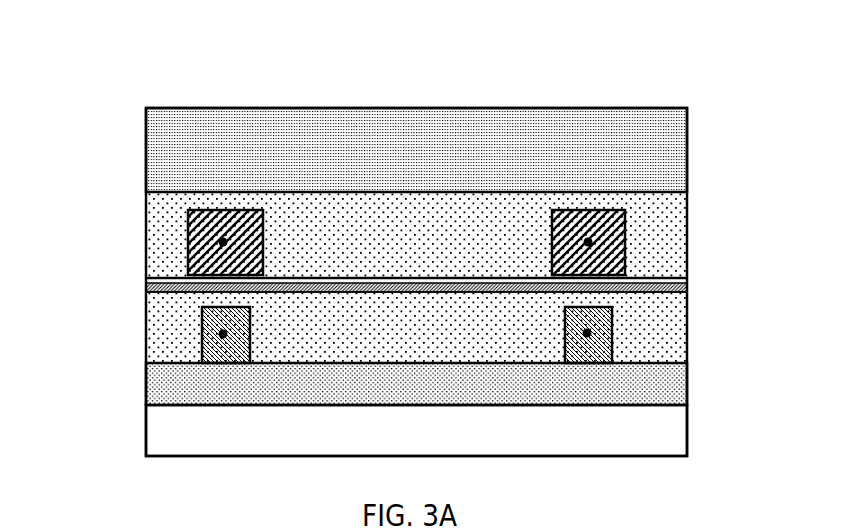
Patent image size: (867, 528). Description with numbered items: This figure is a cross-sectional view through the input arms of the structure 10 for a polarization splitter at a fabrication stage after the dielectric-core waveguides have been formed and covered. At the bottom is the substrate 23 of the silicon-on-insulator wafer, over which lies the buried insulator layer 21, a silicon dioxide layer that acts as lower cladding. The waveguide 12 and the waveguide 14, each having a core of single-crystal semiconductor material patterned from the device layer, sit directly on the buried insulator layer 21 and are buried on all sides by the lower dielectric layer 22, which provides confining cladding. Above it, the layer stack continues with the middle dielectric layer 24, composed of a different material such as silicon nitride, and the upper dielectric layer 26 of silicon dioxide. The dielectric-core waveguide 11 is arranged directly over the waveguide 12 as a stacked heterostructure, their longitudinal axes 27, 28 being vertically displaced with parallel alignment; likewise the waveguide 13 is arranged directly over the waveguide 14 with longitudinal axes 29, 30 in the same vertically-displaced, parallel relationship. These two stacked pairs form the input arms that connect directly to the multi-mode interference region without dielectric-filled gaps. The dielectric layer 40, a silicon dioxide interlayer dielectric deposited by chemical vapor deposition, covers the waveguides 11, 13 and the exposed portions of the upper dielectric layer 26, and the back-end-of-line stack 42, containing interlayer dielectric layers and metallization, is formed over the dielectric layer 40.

The structure 10 is at (129, 85).
The back-end-of-line stack 42 is at (157, 152).
The dielectric layer 40 is at (157, 205).
The waveguide 11 is at (197, 222).
The waveguide 13 is at (618, 222).
The longitudinal axis 27 is at (223, 242).
The longitudinal axis 29 is at (588, 242).
The upper dielectric layer 26 is at (157, 278).
The middle dielectric layer 24 is at (672, 290).
The lower dielectric layer 22 is at (160, 352).
The waveguide 12 is at (220, 315).
The waveguide 14 is at (605, 315).
The longitudinal axis 28 is at (223, 334).
The longitudinal axis 30 is at (587, 333).
The buried insulator layer 21 is at (160, 380).
The substrate 23 is at (160, 427).